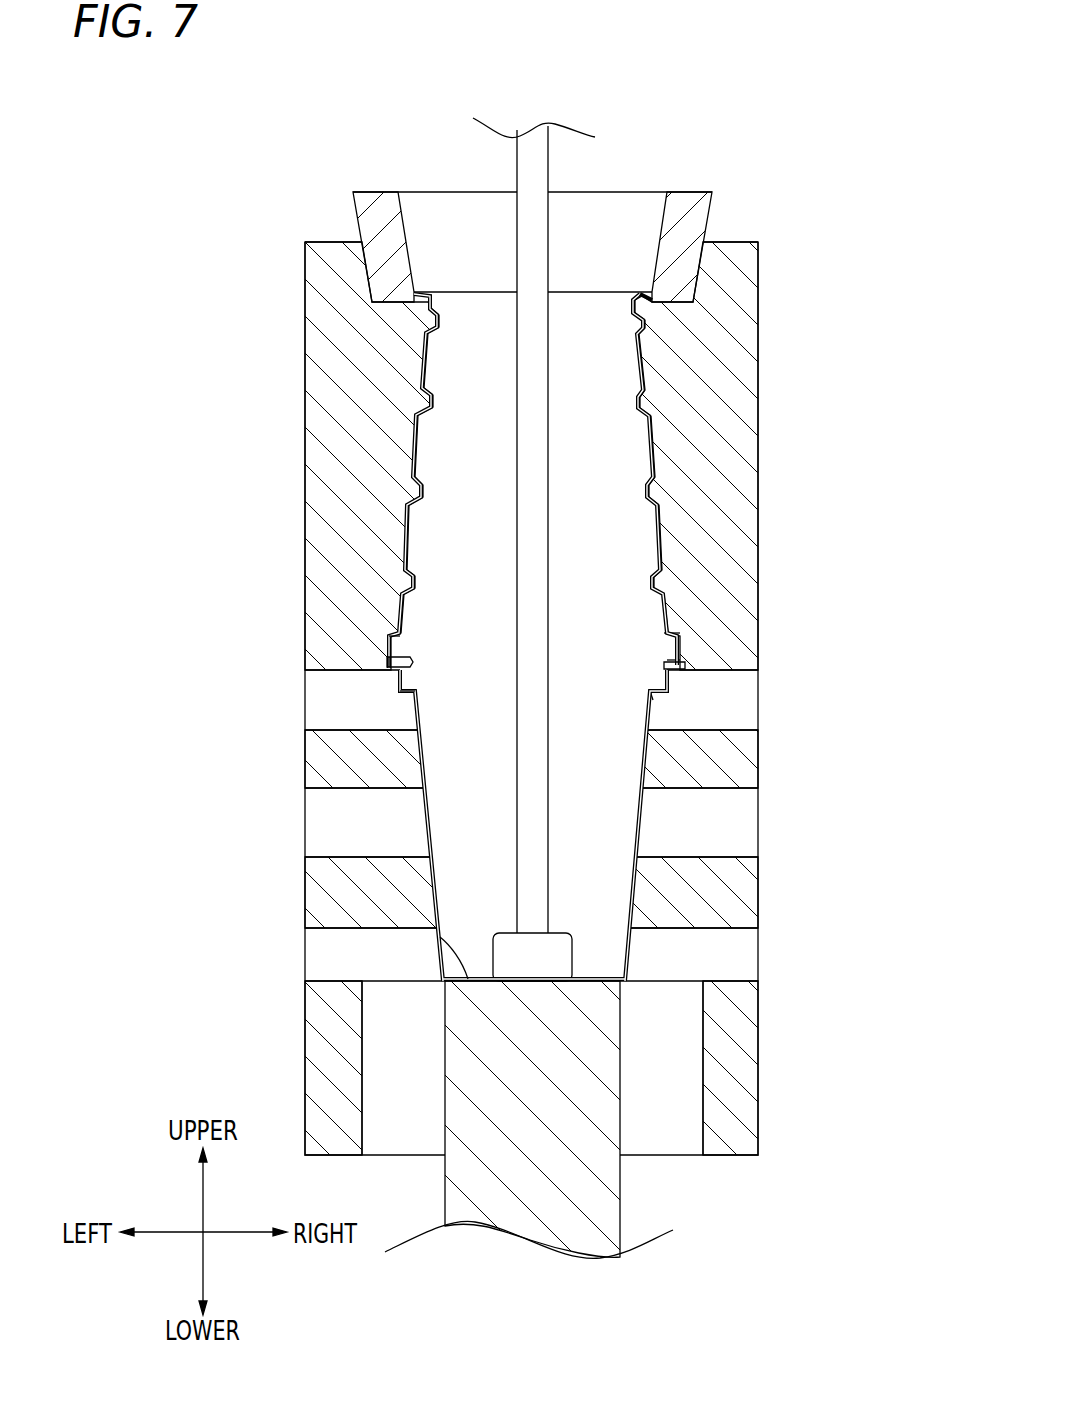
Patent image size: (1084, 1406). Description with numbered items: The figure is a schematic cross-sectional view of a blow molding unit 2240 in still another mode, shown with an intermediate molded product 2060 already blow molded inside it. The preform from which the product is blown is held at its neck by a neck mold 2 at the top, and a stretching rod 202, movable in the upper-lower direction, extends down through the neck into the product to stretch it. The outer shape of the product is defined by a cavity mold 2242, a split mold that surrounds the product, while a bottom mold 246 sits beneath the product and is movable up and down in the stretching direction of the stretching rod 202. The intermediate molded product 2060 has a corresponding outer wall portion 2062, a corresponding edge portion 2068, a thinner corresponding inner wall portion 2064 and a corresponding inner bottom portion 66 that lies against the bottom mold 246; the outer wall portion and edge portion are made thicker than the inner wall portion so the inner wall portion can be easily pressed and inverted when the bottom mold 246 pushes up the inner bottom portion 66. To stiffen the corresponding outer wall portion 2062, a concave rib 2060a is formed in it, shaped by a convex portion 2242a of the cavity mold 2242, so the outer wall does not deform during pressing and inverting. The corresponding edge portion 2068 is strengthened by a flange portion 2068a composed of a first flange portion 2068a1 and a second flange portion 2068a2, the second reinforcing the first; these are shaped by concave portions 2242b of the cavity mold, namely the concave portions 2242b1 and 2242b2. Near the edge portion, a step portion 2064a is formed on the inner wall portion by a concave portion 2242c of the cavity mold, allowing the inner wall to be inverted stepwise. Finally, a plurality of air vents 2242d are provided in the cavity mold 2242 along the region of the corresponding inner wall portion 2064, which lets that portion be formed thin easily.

The neck mold 2 is at (705, 215).
The stretching rod 202 is at (548, 175).
The blow molding unit 2240 is at (790, 318).
The cavity mold 2242 is at (730, 518).
The convex portion 2242a is at (645, 322).
The concave portions 2242b is at (856, 582).
The concave portion 2242b1 is at (682, 663).
The concave portion 2242b2 is at (677, 643).
The concave portion 2242c is at (667, 688).
The air vents 2242d is at (300, 700).
The intermediate molded product 2060 is at (650, 460).
The concave rib 2060a is at (635, 325).
The corresponding outer wall portion 2062 is at (423, 362).
The corresponding inner wall portion 2064 is at (420, 760).
The step portion 2064a is at (420, 693).
The corresponding edge portion 2068 is at (677, 673).
The flange portion 2068a is at (166, 557).
The first flange portion 2068a1 is at (405, 606).
The second flange portion 2068a2 is at (397, 660).
The corresponding inner bottom portion 66 is at (440, 937).
The bottom mold 246 is at (582, 1165).